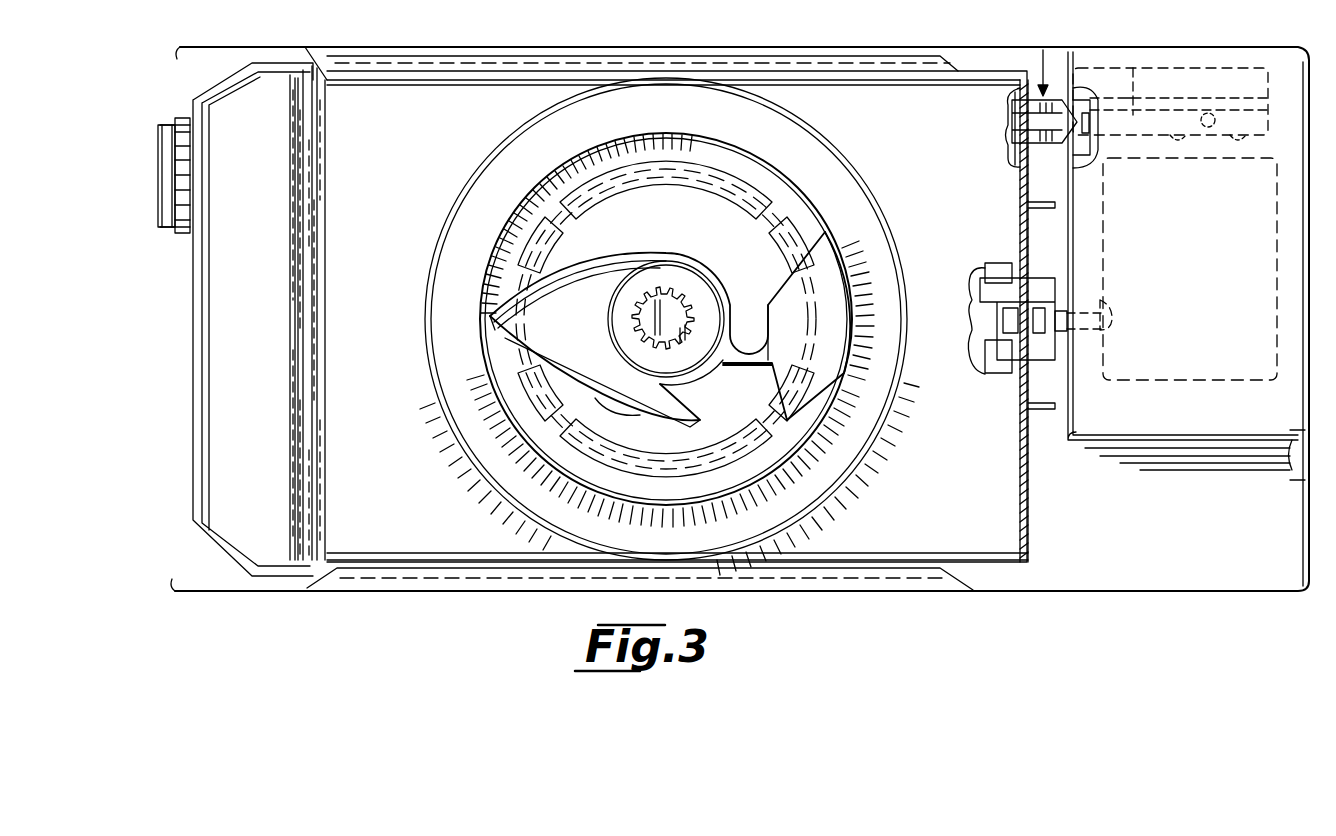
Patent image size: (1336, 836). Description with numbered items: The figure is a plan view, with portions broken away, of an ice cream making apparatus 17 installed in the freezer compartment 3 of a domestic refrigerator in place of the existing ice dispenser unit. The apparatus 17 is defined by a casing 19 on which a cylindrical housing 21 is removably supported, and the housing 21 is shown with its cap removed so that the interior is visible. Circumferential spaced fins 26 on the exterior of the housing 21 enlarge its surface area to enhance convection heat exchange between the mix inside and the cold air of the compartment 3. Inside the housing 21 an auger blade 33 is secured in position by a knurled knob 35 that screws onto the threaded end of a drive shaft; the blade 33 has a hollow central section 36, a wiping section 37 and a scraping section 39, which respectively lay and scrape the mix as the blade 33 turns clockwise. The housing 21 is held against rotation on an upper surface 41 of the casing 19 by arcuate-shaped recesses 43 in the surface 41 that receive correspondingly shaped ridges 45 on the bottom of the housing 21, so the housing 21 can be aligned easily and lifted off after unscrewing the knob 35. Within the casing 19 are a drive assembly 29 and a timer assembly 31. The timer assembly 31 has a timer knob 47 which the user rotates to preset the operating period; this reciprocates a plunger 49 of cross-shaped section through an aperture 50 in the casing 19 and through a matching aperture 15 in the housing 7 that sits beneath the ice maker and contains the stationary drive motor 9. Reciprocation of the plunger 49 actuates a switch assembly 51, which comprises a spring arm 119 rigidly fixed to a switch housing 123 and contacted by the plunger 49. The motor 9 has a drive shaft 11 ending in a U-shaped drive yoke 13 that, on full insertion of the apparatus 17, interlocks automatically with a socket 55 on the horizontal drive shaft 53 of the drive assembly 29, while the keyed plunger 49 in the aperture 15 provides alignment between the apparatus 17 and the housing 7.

The freezer compartment 3 is at (1085, 522).
The housing 7 is at (1133, 442).
The drive motor 9 is at (1142, 383).
The drive shaft 11 is at (1068, 300).
The drive yoke 13 is at (1040, 278).
The aperture 15 is at (1074, 150).
The apparatus 17 is at (1034, 480).
The casing 19 is at (962, 589).
The cylindrical housing 21 is at (850, 282).
The fins 26 is at (840, 160).
The drive assembly 29 is at (998, 380).
The timer assembly 31 is at (150, 135).
The auger blade 33 is at (608, 262).
The knurled knob 35 is at (690, 300).
The hollow central section 36 is at (672, 262).
The wiping section 37 is at (592, 412).
The scraping section 39 is at (760, 390).
The upper surface 41 is at (672, 479).
The arcuate-shaped recesses 43 is at (545, 250).
The ridges 45 is at (550, 276).
The timer knob 47 is at (162, 230).
The plunger 49 is at (1036, 150).
The aperture 50 is at (1017, 108).
The switch assembly 51 is at (1086, 108).
The horizontal drive shaft 53 is at (975, 315).
The socket 55 is at (1000, 268).
The spring arm 119 is at (1133, 100).
The switch housing 123 is at (1212, 137).